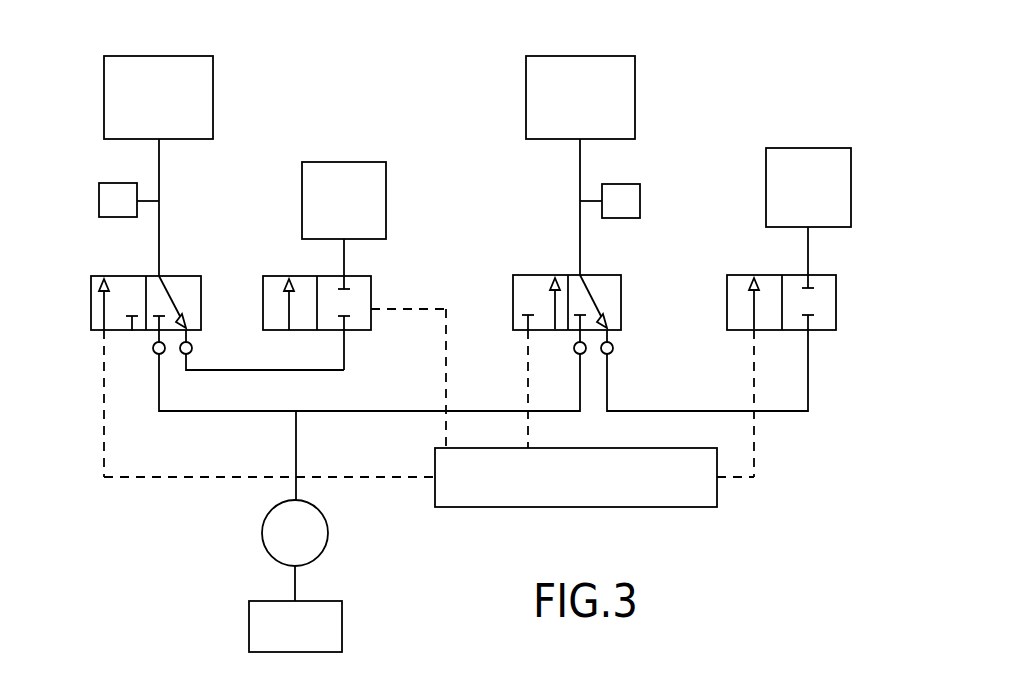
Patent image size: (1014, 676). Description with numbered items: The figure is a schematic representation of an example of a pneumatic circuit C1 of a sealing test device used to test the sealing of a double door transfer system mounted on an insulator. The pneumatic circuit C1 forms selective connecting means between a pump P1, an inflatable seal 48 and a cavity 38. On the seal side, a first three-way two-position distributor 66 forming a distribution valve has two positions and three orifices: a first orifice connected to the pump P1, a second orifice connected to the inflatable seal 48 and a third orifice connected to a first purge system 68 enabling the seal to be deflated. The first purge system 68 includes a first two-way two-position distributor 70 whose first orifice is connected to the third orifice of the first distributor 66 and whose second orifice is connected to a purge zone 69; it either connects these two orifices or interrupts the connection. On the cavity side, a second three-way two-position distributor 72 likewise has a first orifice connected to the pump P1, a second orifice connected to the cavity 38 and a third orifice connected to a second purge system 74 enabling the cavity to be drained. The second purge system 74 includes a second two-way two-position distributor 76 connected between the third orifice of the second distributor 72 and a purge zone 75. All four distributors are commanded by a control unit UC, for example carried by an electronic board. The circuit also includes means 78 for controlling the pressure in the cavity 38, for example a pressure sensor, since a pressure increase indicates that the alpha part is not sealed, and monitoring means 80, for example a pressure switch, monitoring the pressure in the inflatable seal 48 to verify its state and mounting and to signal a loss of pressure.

The pneumatic circuit C1 is at (478, 90).
The inflatable seal 48 is at (207, 94).
The cavity 38 is at (627, 94).
The monitoring means 80 is at (108, 201).
The means for controlling the pressure 78 is at (634, 201).
The first distributor 3/2 66 is at (91, 304).
The second distributor 3/2 72 is at (513, 297).
The purge zone 69 is at (378, 192).
The first distributor 2/2 70 is at (362, 293).
The purge zone 75 is at (843, 190).
The second distributor 2/2 76 is at (836, 300).
The first purge system 68 is at (354, 382).
The second purge system 74 is at (772, 428).
The control unit UC is at (655, 497).
The pump P1 is at (272, 532).